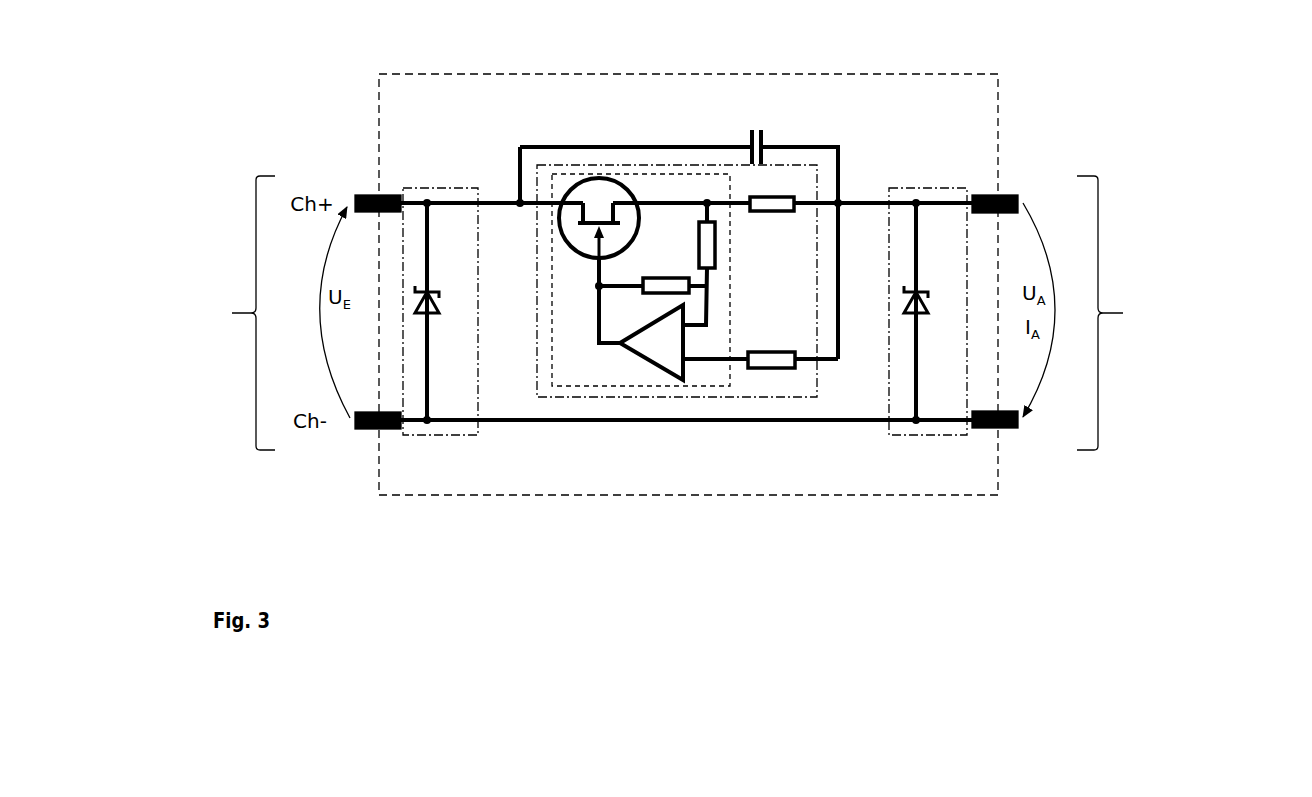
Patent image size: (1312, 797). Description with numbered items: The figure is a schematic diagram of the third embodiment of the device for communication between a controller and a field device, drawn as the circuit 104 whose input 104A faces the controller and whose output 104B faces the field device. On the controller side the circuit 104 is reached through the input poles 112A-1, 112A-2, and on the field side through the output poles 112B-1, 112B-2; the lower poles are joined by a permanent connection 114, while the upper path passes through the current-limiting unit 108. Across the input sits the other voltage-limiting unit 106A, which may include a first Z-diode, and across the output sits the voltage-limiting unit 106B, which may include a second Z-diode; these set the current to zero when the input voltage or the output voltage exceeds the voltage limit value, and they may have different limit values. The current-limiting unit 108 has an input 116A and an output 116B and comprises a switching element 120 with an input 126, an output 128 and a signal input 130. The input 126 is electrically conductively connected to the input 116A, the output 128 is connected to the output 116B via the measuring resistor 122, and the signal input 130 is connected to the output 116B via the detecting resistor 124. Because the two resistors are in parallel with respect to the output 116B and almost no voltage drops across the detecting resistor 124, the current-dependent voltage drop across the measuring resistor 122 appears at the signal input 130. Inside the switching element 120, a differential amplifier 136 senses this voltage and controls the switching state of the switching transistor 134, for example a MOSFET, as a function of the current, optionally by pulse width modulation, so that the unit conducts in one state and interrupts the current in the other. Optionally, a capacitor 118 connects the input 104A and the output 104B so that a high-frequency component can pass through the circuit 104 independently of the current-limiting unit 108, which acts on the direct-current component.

The circuit of the device 104 is at (513, 73).
The input of the circuit 104A is at (232, 312).
The output of the circuit 104B is at (1123, 312).
The other voltage-limiting unit 106A is at (441, 188).
The voltage-limiting unit 106B is at (927, 188).
The current-limiting unit 108 is at (820, 163).
The input pole 112A-1 is at (355, 196).
The input pole 112A-2 is at (355, 421).
The output pole 112B-1 is at (1018, 196).
The output pole 112B-2 is at (1018, 428).
The permanent connection 114 is at (553, 421).
The input of the current-limiting unit 116A is at (527, 203).
The output of the current-limiting unit 116B is at (840, 207).
The capacitor 118 is at (753, 128).
The switching element 120 is at (588, 387).
The measuring resistor 122 is at (753, 197).
The detecting resistor 124 is at (778, 364).
The input of the switching element 126 is at (527, 203).
The output of the switching element 128 is at (705, 212).
The signal input of the switching element 130 is at (685, 360).
The switching transistor 134 is at (620, 180).
The differential amplifier 136 is at (642, 358).